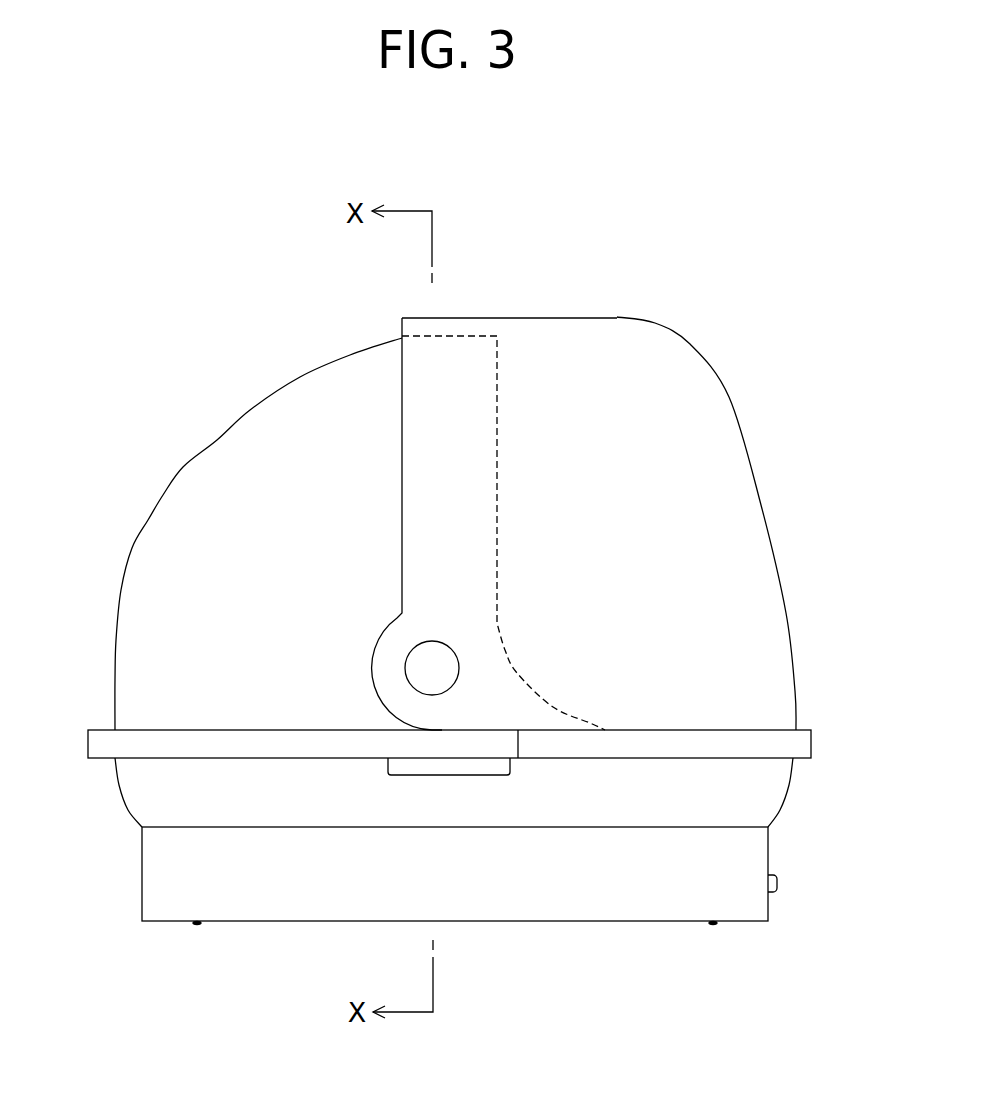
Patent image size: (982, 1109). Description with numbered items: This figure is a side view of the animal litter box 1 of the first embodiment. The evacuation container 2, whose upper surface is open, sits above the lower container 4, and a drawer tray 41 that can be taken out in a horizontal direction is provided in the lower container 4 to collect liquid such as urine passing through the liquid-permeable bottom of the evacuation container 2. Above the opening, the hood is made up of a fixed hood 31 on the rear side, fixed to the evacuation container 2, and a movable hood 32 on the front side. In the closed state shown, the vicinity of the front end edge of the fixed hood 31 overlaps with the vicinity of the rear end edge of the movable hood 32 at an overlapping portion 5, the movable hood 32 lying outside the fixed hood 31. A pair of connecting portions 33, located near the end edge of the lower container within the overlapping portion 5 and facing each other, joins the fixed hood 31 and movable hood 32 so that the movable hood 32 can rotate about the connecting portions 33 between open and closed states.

The animal litter box 1 is at (192, 290).
The evacuation container 2 is at (160, 800).
The lower container 4 is at (172, 882).
The overlapping portion 5 is at (440, 368).
The fixed hood 31 is at (173, 508).
The movable hood 32 is at (556, 325).
The connecting portion 33 is at (422, 662).
The drawer tray 41 is at (778, 883).